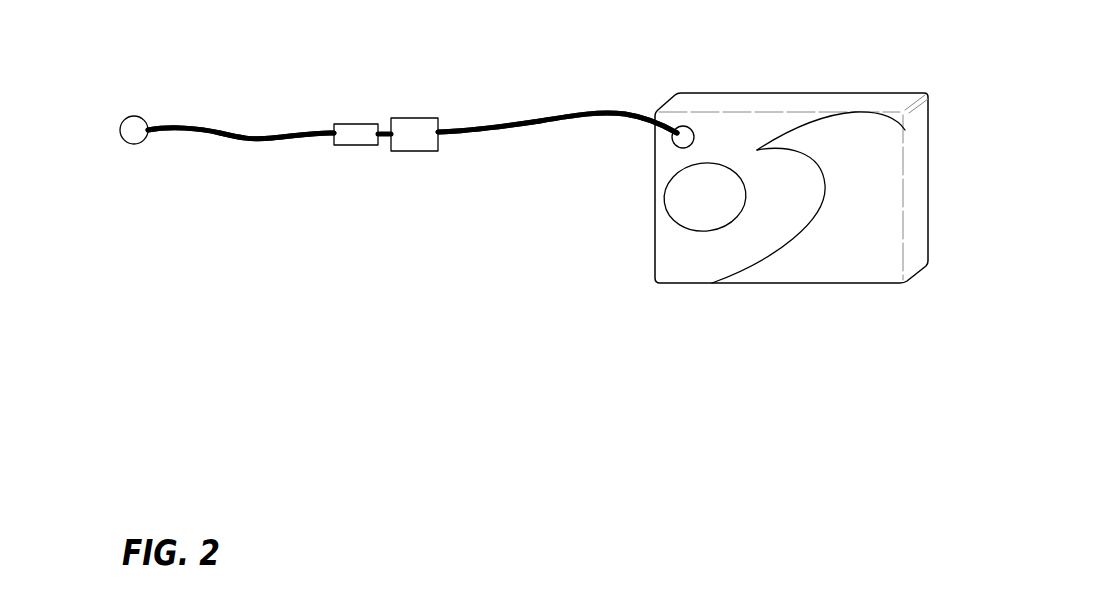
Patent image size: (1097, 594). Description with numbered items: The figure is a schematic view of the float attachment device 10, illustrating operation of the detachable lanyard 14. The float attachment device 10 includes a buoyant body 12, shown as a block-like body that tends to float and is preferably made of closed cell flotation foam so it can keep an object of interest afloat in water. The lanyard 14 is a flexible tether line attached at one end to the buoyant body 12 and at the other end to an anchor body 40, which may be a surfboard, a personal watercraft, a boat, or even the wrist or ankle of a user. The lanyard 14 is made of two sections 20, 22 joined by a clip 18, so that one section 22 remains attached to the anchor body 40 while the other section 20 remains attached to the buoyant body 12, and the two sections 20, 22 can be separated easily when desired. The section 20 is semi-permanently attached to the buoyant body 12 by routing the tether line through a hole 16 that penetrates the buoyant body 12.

The float attachment device 10 is at (417, 319).
The buoyant body 12 is at (800, 98).
The lanyard 14 is at (311, 229).
The hole 16 is at (670, 152).
The clip 18 is at (407, 118).
The lanyard section 20 is at (552, 118).
The lanyard section 22 is at (247, 135).
The anchor body 40 is at (134, 144).